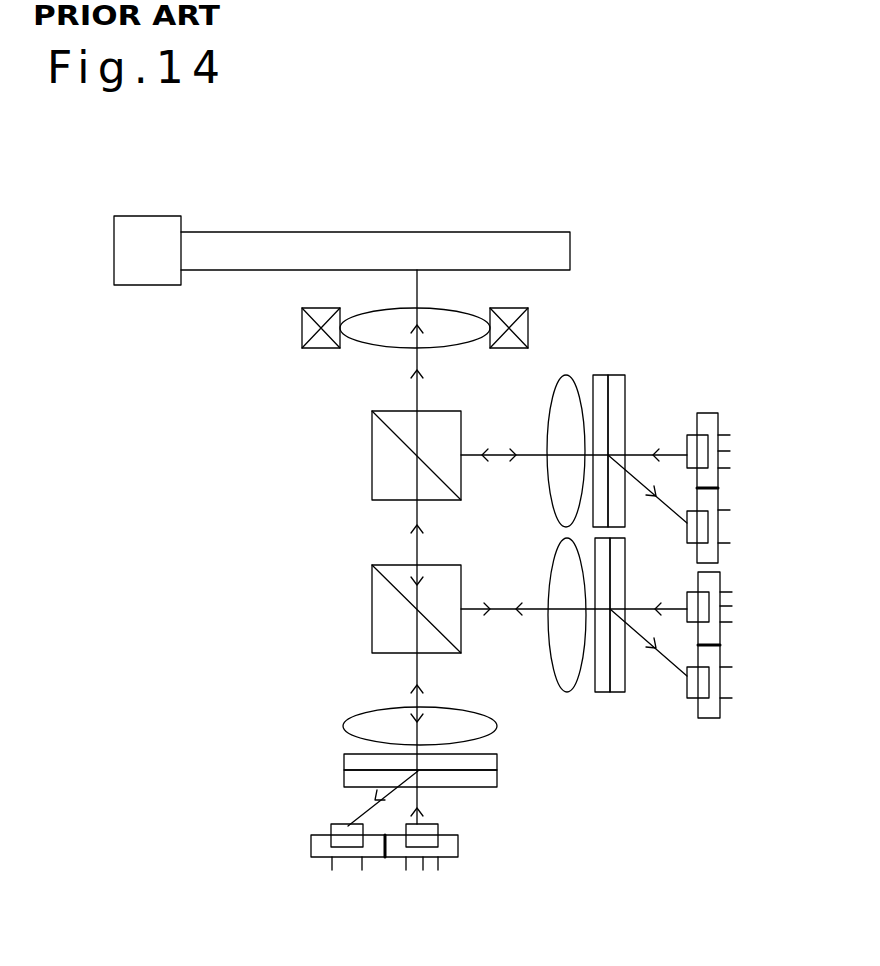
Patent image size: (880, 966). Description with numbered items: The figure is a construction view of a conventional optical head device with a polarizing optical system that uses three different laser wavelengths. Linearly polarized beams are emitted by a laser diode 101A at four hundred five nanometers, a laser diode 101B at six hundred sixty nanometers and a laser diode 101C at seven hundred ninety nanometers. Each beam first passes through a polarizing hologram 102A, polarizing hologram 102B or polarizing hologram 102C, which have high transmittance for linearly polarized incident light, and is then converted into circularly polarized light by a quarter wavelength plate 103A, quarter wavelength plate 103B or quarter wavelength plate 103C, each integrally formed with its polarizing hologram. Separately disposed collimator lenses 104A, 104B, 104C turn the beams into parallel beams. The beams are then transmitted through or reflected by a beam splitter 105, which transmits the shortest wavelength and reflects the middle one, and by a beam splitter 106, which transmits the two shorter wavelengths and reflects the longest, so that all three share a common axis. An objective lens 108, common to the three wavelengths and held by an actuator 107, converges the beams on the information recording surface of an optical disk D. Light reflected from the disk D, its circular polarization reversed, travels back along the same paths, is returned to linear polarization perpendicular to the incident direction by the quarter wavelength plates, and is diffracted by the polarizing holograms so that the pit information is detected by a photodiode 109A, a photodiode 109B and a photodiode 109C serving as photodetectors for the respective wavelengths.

The optical disk D is at (480, 243).
The objective lens 108 is at (460, 322).
The actuator 107 is at (310, 330).
The beam splitter 106 is at (377, 450).
The beam splitter 105 is at (383, 596).
The collimator lens 104A is at (367, 727).
The collimator lens 104B is at (565, 655).
The collimator lens 104C is at (560, 420).
The quarter wavelength plate 103A is at (355, 765).
The quarter wavelength plate 103B is at (600, 690).
The quarter wavelength plate 103C is at (598, 375).
The polarizing hologram 102A is at (350, 785).
The polarizing hologram 102B is at (620, 675).
The polarizing hologram 102C is at (624, 382).
The laser diode 101A is at (445, 848).
The laser diode 101B is at (710, 583).
The laser diode 101C is at (705, 425).
The photodiode 109A is at (340, 850).
The photodiode 109B is at (710, 705).
The photodiode 109C is at (708, 505).